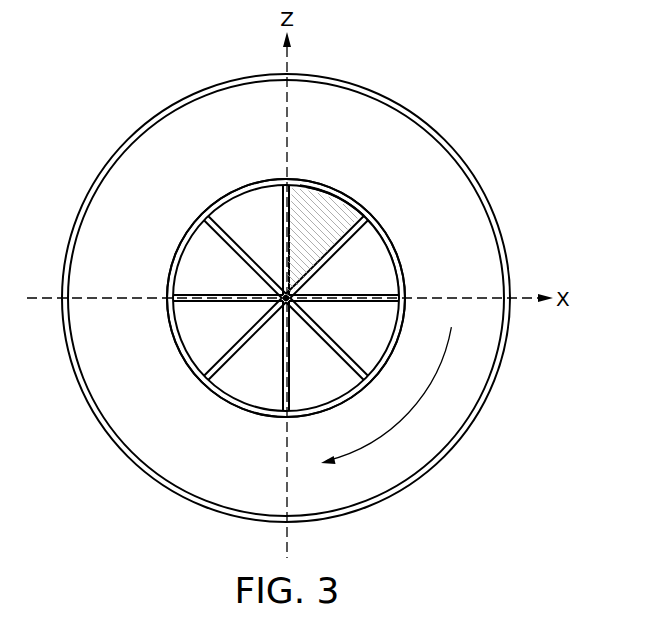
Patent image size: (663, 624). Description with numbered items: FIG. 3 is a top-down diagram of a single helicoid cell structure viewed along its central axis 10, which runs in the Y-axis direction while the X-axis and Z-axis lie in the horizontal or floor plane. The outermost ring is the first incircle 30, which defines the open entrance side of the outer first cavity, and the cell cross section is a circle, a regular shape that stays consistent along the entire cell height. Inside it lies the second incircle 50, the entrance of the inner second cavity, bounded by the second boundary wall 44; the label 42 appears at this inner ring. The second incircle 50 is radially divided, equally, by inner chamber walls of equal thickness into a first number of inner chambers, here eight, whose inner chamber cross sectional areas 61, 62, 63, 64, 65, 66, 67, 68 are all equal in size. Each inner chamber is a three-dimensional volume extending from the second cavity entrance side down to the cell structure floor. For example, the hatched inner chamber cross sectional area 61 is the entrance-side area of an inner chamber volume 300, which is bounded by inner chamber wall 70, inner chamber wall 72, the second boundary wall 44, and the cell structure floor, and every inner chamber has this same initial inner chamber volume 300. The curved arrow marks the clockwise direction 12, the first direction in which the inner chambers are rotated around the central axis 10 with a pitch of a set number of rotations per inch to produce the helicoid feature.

The central axis 10 is at (285, 296).
The clockwise direction 12 is at (407, 415).
The first incircle 30 is at (338, 74).
The annular wall 42 is at (378, 249).
The second boundary wall 44 is at (404, 283).
The second incircle 50 is at (272, 178).
The inner chamber cross sectional area 61 is at (300, 241).
The inner chamber cross sectional area 62 is at (339, 281).
The inner chamber cross sectional area 63 is at (341, 339).
The inner chamber cross sectional area 64 is at (301, 382).
The inner chamber cross sectional area 65 is at (242, 382).
The inner chamber cross sectional area 66 is at (201, 340).
The inner chamber cross sectional area 67 is at (201, 283).
The inner chamber cross sectional area 68 is at (244, 219).
The inner chamber wall 70 is at (360, 237).
The inner chamber wall 72 is at (300, 201).
The inner chamber volume 300 is at (345, 211).